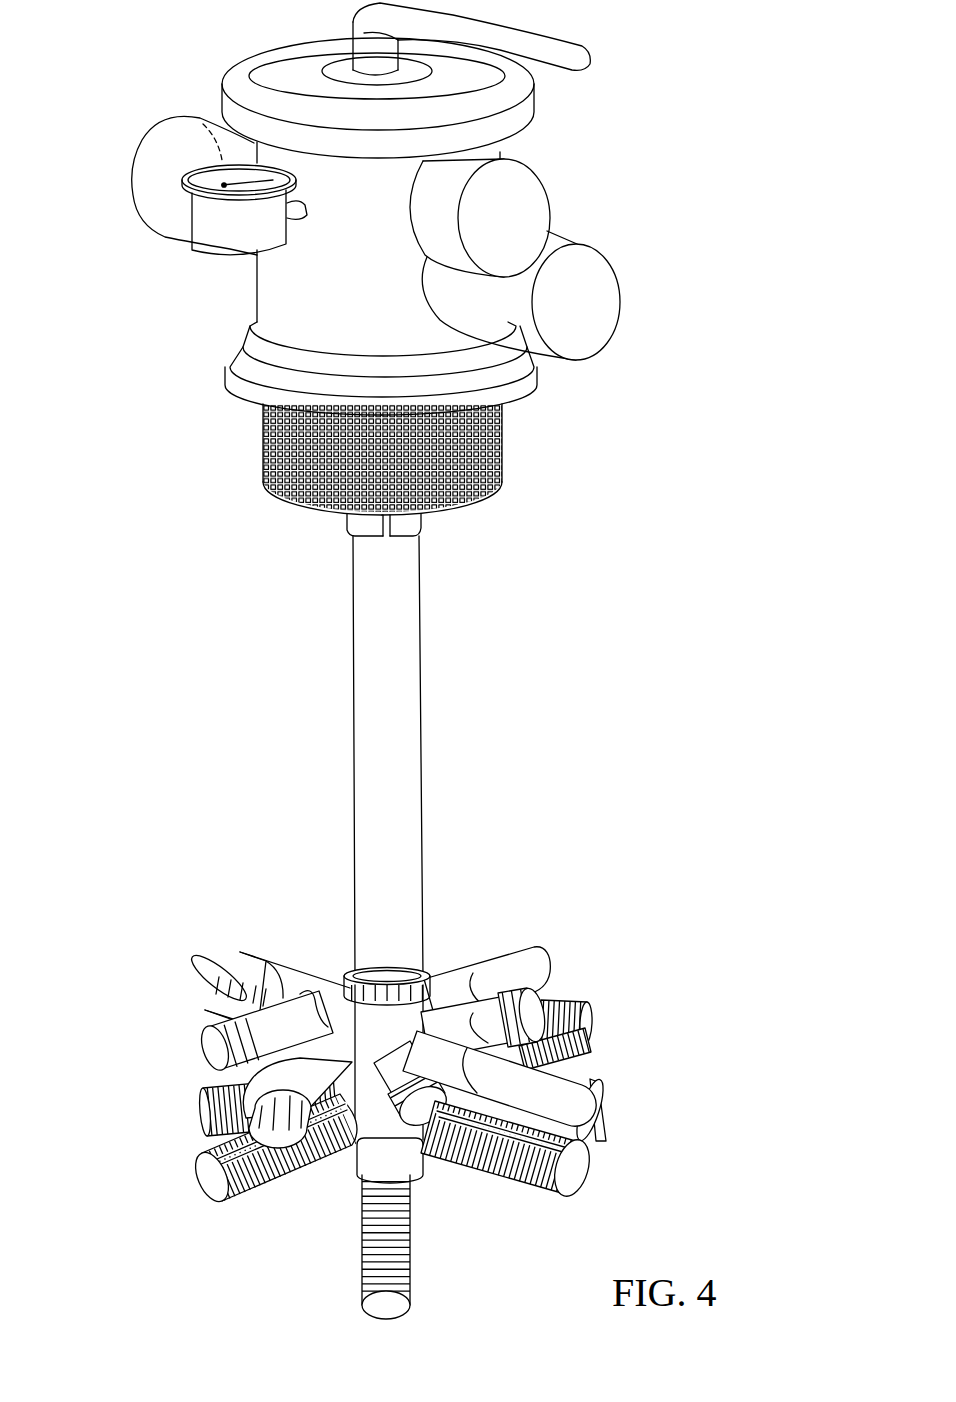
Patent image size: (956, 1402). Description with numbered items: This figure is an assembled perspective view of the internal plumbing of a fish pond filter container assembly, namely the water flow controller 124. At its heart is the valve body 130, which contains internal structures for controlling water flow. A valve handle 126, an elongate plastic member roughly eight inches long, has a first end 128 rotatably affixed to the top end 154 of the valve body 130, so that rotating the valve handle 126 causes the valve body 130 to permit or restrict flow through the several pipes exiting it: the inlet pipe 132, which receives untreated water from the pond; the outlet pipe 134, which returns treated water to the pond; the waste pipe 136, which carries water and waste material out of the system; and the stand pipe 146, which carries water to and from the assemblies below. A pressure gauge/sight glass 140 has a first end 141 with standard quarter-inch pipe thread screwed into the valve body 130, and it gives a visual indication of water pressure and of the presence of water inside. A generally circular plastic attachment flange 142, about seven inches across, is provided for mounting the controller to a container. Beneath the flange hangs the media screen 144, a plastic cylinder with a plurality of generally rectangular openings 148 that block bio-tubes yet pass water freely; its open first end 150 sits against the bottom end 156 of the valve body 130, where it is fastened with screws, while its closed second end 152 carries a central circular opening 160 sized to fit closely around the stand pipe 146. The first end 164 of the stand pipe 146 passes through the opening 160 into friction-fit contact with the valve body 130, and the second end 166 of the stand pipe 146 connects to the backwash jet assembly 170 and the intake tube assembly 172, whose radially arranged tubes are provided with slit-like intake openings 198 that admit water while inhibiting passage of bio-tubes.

The water flow controller 124 is at (106, 100).
The valve handle 126 is at (578, 51).
The first end of the valve handle 128 is at (370, 47).
The valve body 130 is at (277, 297).
The inlet pipe 132 is at (530, 190).
The outlet pipe 134 is at (602, 293).
The waste pipe 136 is at (150, 177).
The pressure gauge/sight glass 140 is at (200, 237).
The first end of the pressure gauge/sight glass 141 is at (297, 214).
The attachment flange 142 is at (232, 375).
The media screen 144 is at (263, 440).
The stand pipe 146 is at (370, 705).
The openings 148 is at (278, 500).
The first end of the media screen 150 is at (505, 428).
The second end of the media screen 152 is at (487, 502).
The top end of the valve body 154 is at (270, 70).
The bottom end of the valve body 156 is at (530, 392).
The circular opening 160 is at (420, 523).
The first end of the stand pipe 164 is at (390, 528).
The second end of the stand pipe 166 is at (447, 960).
The backwash jet assembly 170 is at (533, 962).
The intake tube assembly 172 is at (598, 1165).
The intake openings 198 is at (362, 1128).